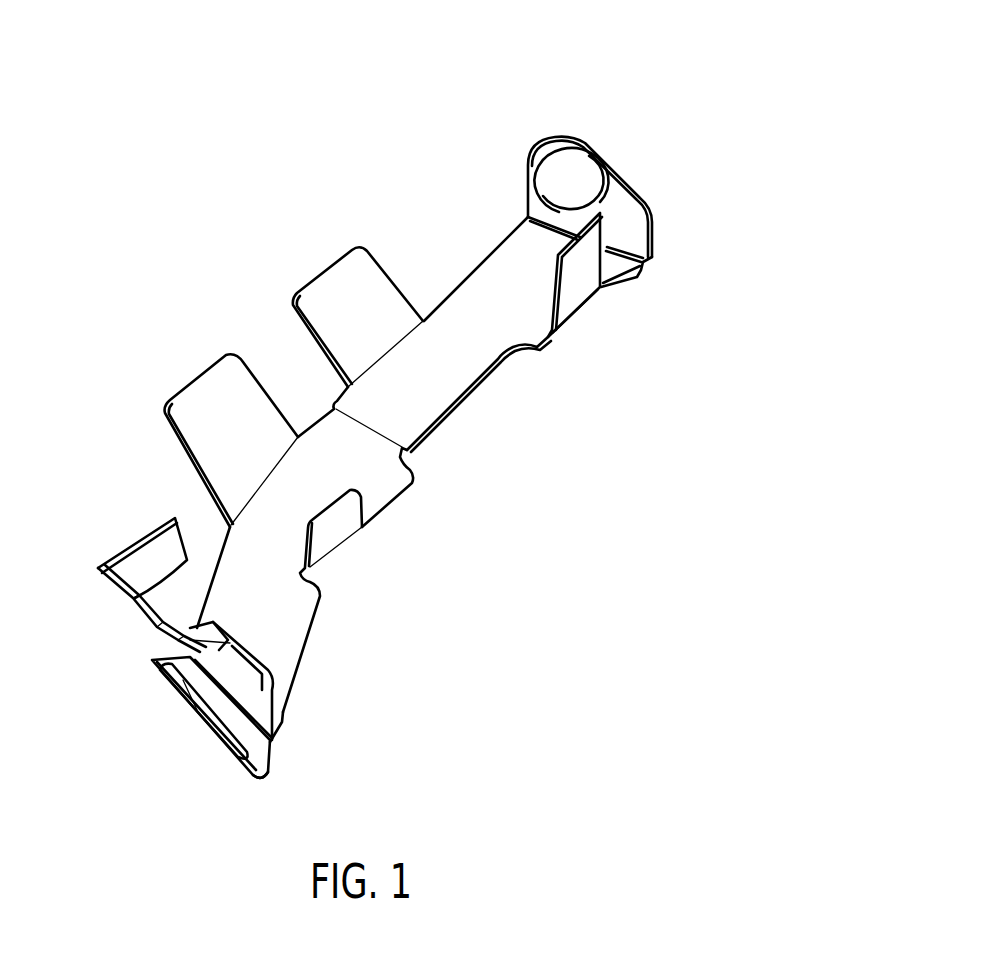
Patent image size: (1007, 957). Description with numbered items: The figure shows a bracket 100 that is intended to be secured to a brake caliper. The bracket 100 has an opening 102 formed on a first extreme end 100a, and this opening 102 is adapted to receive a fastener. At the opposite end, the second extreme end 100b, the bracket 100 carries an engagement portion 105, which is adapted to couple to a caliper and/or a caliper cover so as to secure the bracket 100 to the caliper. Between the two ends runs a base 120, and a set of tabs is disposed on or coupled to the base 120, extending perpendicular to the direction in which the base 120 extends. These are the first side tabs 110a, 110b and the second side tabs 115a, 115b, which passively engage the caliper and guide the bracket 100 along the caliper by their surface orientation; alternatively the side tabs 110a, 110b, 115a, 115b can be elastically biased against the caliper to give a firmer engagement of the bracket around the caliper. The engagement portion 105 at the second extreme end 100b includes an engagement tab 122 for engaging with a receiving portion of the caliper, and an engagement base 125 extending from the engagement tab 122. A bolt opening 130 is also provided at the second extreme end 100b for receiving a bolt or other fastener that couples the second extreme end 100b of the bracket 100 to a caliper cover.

The bracket 100 is at (613, 102).
The first extreme end 100a is at (569, 136).
The opening 102 is at (590, 184).
The first side tab 110a is at (575, 293).
The first side tab 110b is at (332, 533).
The second side tab 115a is at (336, 289).
The second side tab 115b is at (198, 401).
The base 120 is at (387, 482).
The engagement tab 122 is at (137, 563).
The engagement base 125 is at (118, 607).
The engagement portion 105 is at (144, 640).
The bolt opening 130 is at (203, 710).
The second extreme end 100b is at (265, 762).